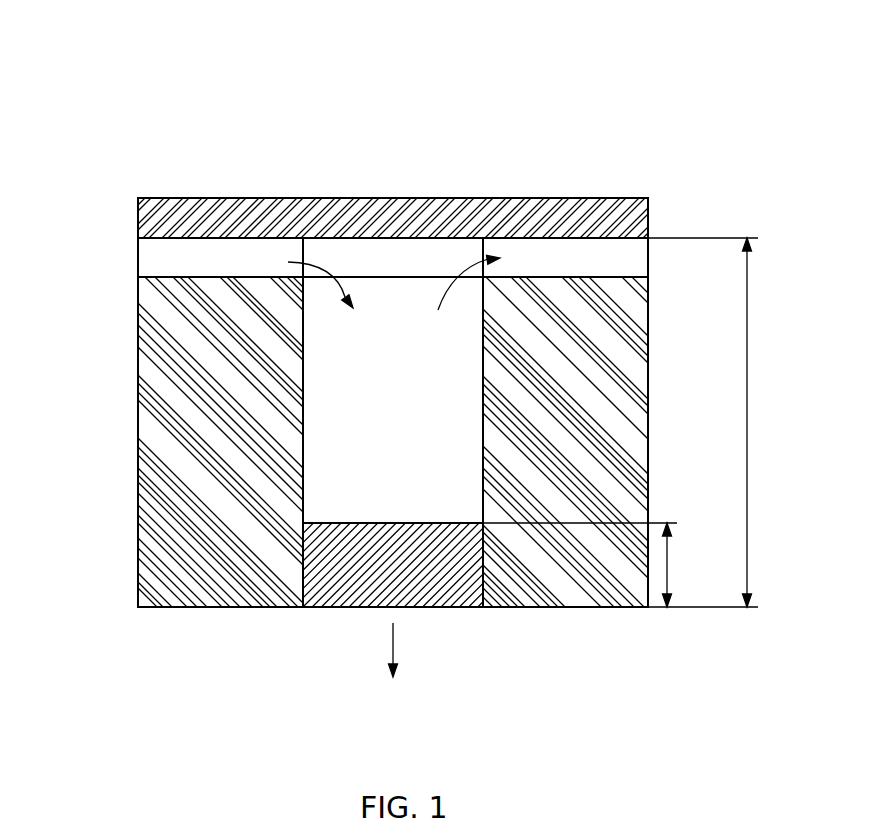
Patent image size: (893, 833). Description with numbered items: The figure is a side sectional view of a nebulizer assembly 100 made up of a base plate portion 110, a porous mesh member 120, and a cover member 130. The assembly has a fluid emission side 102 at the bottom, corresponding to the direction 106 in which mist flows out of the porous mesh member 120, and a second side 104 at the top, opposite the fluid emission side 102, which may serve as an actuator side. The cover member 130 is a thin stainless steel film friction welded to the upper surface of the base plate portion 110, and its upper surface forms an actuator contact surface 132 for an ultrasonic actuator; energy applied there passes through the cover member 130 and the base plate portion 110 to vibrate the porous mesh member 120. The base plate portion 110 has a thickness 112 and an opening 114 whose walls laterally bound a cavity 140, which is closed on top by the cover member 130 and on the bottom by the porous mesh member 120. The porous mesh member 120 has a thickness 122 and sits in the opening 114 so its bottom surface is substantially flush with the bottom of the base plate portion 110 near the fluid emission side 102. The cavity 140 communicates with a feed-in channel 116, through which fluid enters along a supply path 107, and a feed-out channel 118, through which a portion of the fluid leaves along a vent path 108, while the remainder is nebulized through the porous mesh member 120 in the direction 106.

The nebulizer assembly 100 is at (660, 51).
The fluid emission side 102 is at (108, 618).
The second side 104 is at (113, 207).
The direction 106 is at (398, 640).
The supply path 107 is at (331, 292).
The vent path 108 is at (445, 305).
The base plate portion 110 is at (145, 492).
The thickness 112 is at (746, 422).
The opening 114 is at (305, 628).
The feed-in channel 116 is at (127, 255).
The feed-out channel 118 is at (668, 274).
The porous mesh member 120 is at (468, 598).
The thickness 122 is at (668, 580).
The cover member 130 is at (590, 198).
The actuator contact surface 132 is at (226, 188).
The cavity 140 is at (412, 278).